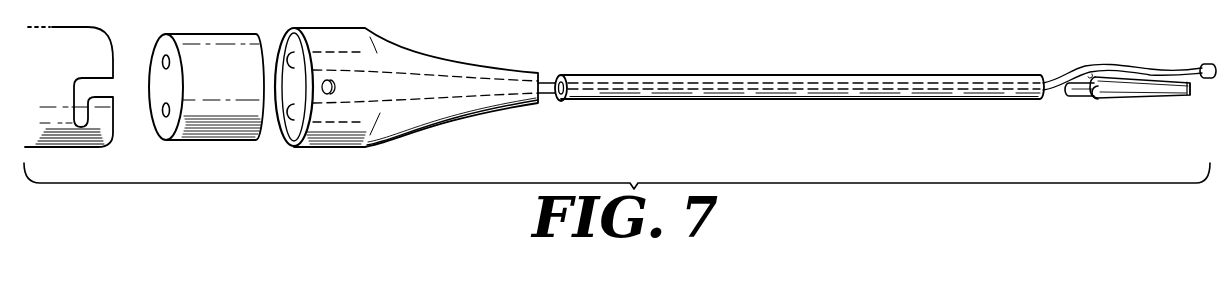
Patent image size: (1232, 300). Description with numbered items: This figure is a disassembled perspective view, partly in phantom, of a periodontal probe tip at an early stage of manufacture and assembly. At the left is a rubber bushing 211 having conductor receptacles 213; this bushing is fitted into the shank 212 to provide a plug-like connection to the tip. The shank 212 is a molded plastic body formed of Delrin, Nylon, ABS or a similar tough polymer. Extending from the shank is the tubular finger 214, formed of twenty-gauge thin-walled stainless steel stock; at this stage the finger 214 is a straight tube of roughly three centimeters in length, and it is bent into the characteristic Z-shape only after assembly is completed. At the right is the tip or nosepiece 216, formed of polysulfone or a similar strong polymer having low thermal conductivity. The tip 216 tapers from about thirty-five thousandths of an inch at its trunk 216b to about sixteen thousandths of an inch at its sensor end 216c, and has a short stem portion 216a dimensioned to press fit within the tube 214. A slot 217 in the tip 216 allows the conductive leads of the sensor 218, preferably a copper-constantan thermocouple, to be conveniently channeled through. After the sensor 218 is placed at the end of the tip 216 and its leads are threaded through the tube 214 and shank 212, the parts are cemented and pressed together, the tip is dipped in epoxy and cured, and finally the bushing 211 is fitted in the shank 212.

The rubber bushing 211 is at (206, 52).
The shank 212 is at (413, 58).
The conductor receptacles 213 is at (161, 66).
The tubular finger 214 is at (748, 75).
The tip 216 is at (1112, 63).
The stem portion 216a is at (1081, 97).
The trunk 216b is at (1098, 100).
The sensor end 216c is at (1187, 97).
The slot 217 is at (1129, 78).
The sensor 218 is at (1207, 64).